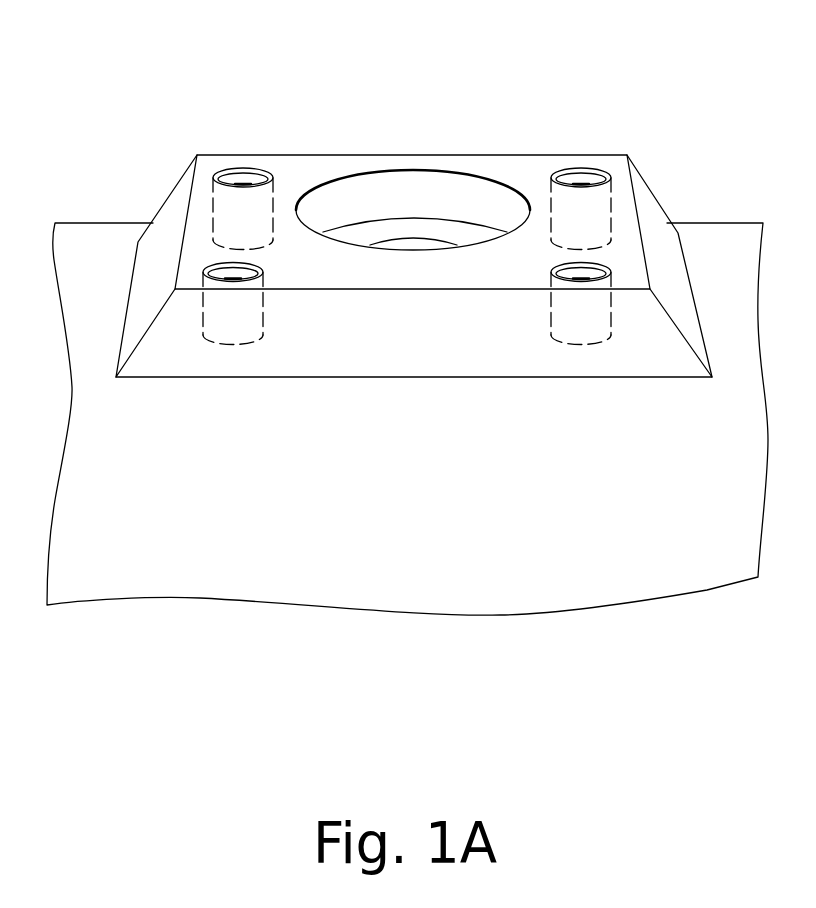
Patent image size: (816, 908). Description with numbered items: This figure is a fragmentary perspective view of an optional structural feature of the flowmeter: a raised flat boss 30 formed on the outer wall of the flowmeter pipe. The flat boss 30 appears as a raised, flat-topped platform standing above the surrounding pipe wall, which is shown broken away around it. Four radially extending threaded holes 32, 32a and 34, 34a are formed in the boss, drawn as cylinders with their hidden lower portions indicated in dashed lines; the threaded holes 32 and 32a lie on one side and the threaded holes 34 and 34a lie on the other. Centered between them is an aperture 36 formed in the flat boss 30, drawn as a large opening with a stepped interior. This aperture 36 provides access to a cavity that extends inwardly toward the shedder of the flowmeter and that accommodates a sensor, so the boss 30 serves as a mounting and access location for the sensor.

The raised flat boss 30 is at (300, 147).
The threaded hole 32 is at (242, 176).
The threaded hole 32a is at (230, 272).
The threaded hole 34 is at (581, 177).
The threaded hole 34a is at (588, 272).
The aperture 36 is at (393, 182).